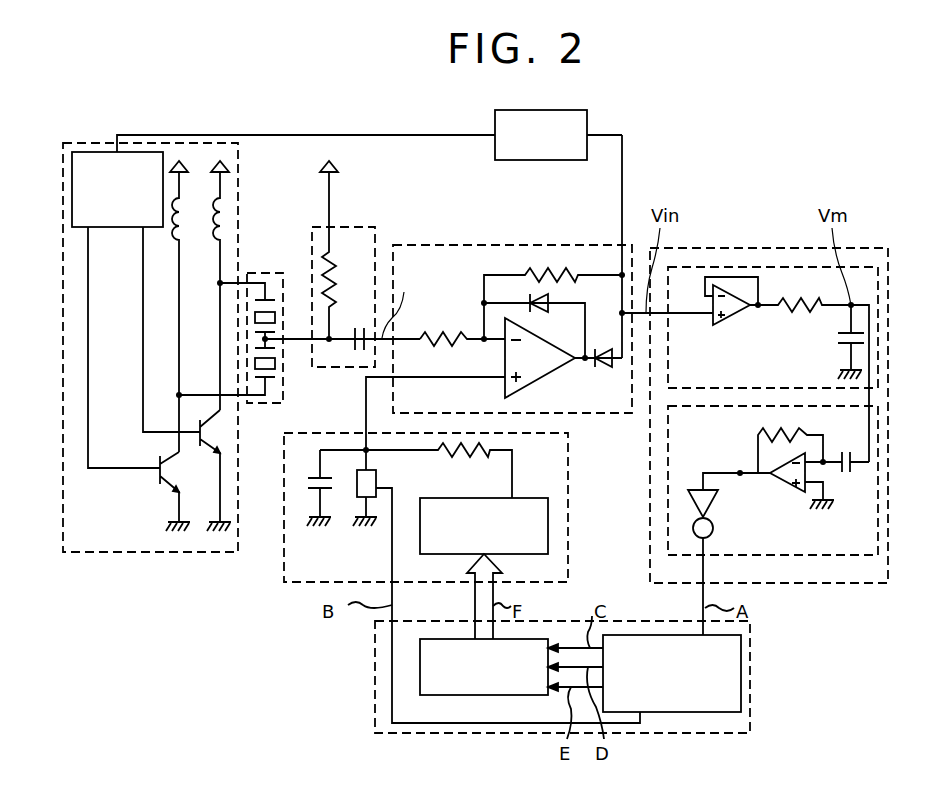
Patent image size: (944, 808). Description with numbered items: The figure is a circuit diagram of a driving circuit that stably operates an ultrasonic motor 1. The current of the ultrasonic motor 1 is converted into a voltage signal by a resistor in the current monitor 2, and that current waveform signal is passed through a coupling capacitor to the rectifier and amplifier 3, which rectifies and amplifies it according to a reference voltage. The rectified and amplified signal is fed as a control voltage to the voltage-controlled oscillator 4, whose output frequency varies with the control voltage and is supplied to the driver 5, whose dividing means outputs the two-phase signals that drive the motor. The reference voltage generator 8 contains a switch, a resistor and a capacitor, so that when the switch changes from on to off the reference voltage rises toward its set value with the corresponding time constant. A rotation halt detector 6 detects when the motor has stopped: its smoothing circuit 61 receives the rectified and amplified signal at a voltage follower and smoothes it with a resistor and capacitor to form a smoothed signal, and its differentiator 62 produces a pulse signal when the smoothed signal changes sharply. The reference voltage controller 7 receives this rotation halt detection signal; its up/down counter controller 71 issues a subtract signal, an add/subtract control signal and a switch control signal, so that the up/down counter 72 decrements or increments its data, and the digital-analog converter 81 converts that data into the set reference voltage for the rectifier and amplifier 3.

The ultrasonic motor 1 is at (263, 273).
The current monitor 2 is at (368, 227).
The rectifier and amplifier 3 is at (429, 247).
The voltage-controlled oscillator (VCO) 4 is at (588, 114).
The driver 5 is at (81, 143).
The rotation halt detector 6 is at (769, 427).
The smoothing circuit 61 is at (780, 267).
The differentiator 62 is at (830, 556).
The reference voltage controller 7 is at (539, 693).
The up/down counter controller 71 is at (700, 712).
The up/down counter 72 is at (518, 695).
The reference voltage generator 8 is at (462, 560).
The digital-analog converter 81 is at (548, 512).